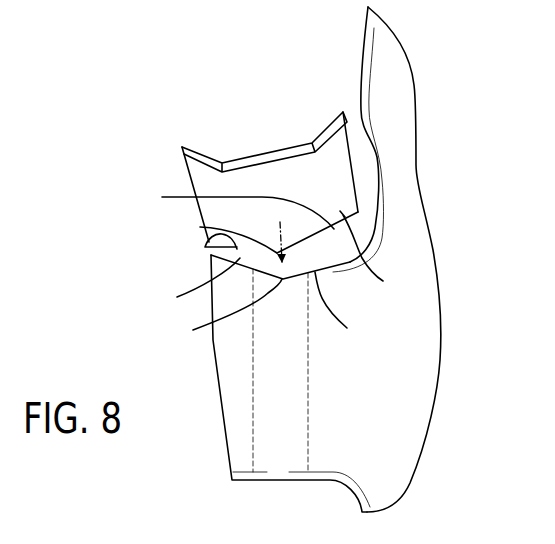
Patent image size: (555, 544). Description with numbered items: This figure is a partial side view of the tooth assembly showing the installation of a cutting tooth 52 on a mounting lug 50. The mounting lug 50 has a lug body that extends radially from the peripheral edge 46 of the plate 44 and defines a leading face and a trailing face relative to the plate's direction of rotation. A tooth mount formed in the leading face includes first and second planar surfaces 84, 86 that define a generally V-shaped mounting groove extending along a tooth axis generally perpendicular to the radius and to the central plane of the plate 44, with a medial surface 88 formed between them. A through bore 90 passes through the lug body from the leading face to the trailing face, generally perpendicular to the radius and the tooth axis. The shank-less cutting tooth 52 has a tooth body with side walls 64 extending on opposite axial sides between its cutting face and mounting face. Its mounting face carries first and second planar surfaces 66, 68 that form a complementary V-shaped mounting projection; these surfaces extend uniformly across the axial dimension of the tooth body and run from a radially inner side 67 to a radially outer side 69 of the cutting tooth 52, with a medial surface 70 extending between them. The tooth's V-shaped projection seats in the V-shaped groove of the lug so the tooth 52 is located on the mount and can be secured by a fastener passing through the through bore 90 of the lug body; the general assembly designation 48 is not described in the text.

The plate 44 is at (446, 210).
The peripheral edge 46 is at (365, 60).
The latch assembly 48 is at (115, 206).
The mounting lug 50 is at (211, 457).
The cutting tooth 52 is at (170, 150).
The side walls 64 is at (375, 256).
The first planar surface 66 is at (207, 243).
The radially inner side 67 is at (352, 163).
The second planar surface 68 is at (162, 197).
The radially outer side 69 is at (192, 183).
The medial surface 70 is at (200, 227).
The first planar surface 84 is at (193, 286).
The second planar surface 86 is at (347, 307).
The medial surface 88 is at (223, 313).
The through bore 90 is at (255, 380).